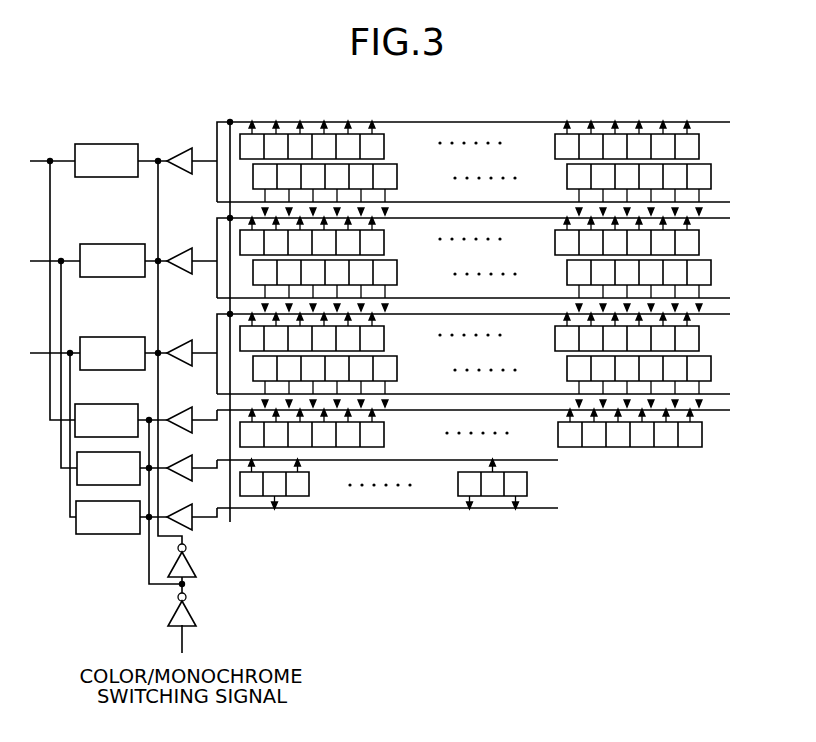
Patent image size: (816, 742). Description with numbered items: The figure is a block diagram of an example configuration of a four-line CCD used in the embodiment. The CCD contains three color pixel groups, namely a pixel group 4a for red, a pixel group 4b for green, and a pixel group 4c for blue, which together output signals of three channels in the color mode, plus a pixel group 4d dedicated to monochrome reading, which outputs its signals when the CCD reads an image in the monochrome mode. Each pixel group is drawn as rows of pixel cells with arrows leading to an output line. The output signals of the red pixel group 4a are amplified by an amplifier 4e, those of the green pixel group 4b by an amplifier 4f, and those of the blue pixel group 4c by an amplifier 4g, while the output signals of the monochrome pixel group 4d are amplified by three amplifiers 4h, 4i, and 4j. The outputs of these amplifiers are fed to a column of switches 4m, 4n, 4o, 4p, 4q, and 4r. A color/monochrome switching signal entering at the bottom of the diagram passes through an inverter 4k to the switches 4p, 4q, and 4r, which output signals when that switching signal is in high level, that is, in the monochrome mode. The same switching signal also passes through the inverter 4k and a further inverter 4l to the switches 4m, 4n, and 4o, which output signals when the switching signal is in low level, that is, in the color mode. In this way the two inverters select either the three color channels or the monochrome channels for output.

The pixel group for red 4a is at (735, 122).
The pixel group for green 4b is at (735, 218).
The pixel group for blue 4c is at (735, 314).
The pixel group for monochrome reading 4d is at (735, 410).
The amplifier 4e is at (178, 149).
The amplifier 4f is at (178, 249).
The amplifier 4g is at (178, 341).
The amplifier 4h is at (178, 407).
The amplifier 4i is at (178, 455).
The amplifier 4j is at (178, 504).
The inverter 4k is at (197, 616).
The inverter 4l is at (197, 567).
The switch 4m is at (112, 133).
The switch 4n is at (112, 233).
The switch 4o is at (112, 326).
The switch 4p is at (109, 395).
The switch 4q is at (77, 465).
The switch 4r is at (76, 512).